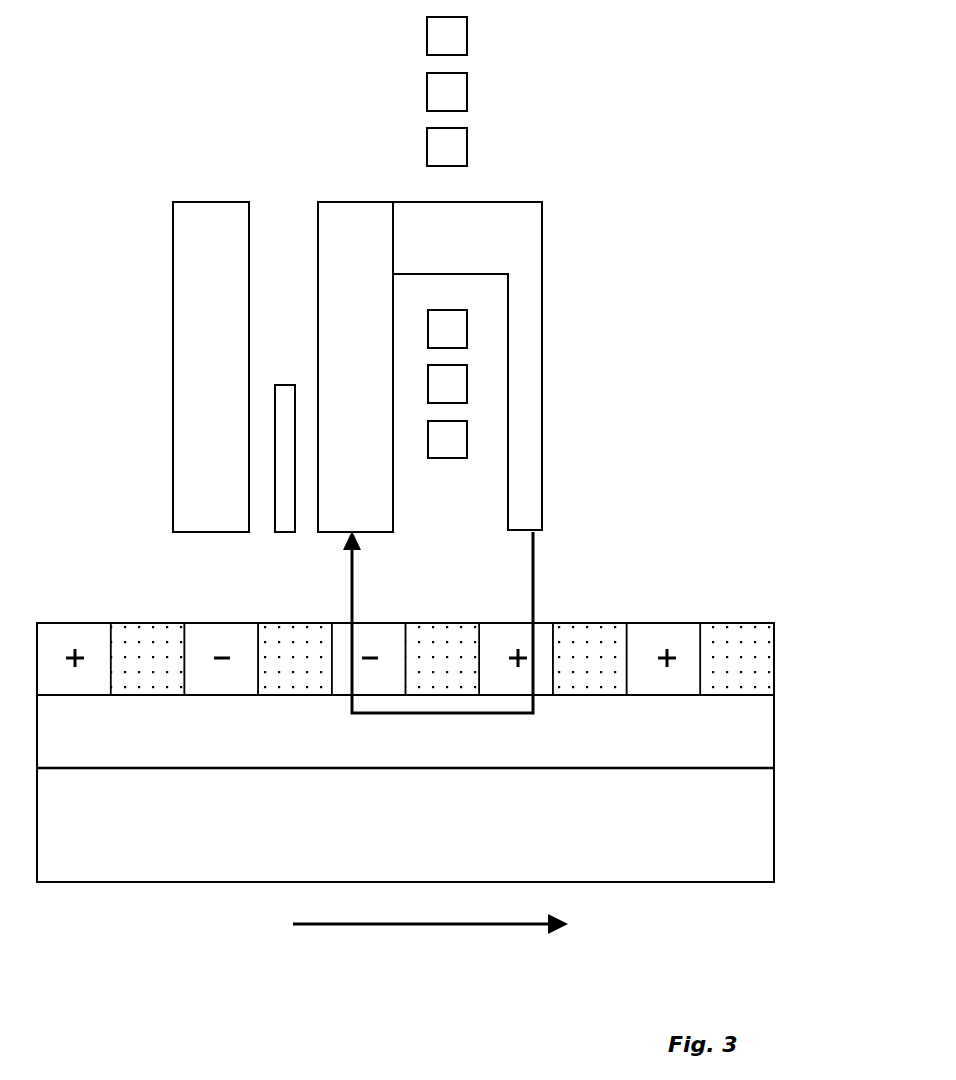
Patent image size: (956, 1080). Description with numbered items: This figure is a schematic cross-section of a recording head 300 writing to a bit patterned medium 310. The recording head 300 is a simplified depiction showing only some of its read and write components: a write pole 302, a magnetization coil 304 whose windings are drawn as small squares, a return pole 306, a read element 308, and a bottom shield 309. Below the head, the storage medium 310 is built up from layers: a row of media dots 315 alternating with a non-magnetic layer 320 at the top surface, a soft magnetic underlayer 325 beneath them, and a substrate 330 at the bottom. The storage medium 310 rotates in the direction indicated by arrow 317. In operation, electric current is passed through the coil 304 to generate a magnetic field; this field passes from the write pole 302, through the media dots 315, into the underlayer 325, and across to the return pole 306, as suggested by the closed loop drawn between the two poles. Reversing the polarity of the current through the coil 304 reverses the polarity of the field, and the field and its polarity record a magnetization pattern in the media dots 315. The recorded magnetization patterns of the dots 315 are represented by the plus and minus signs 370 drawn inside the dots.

The recording head 300 is at (575, 178).
The write pole 302 is at (538, 306).
The magnetization coil 304 is at (440, 385).
The return pole 306 is at (333, 263).
The read element 308 is at (283, 457).
The bottom shield 309 is at (188, 288).
The bit patterned medium 310 is at (780, 792).
The media dots 315 is at (86, 634).
The arrow 317 is at (400, 928).
The non-magnetic layer 320 is at (143, 625).
The soft magnetic underlayer 325 is at (762, 727).
The substrate 330 is at (728, 833).
The "+" and "−" signs 370 is at (73, 668).